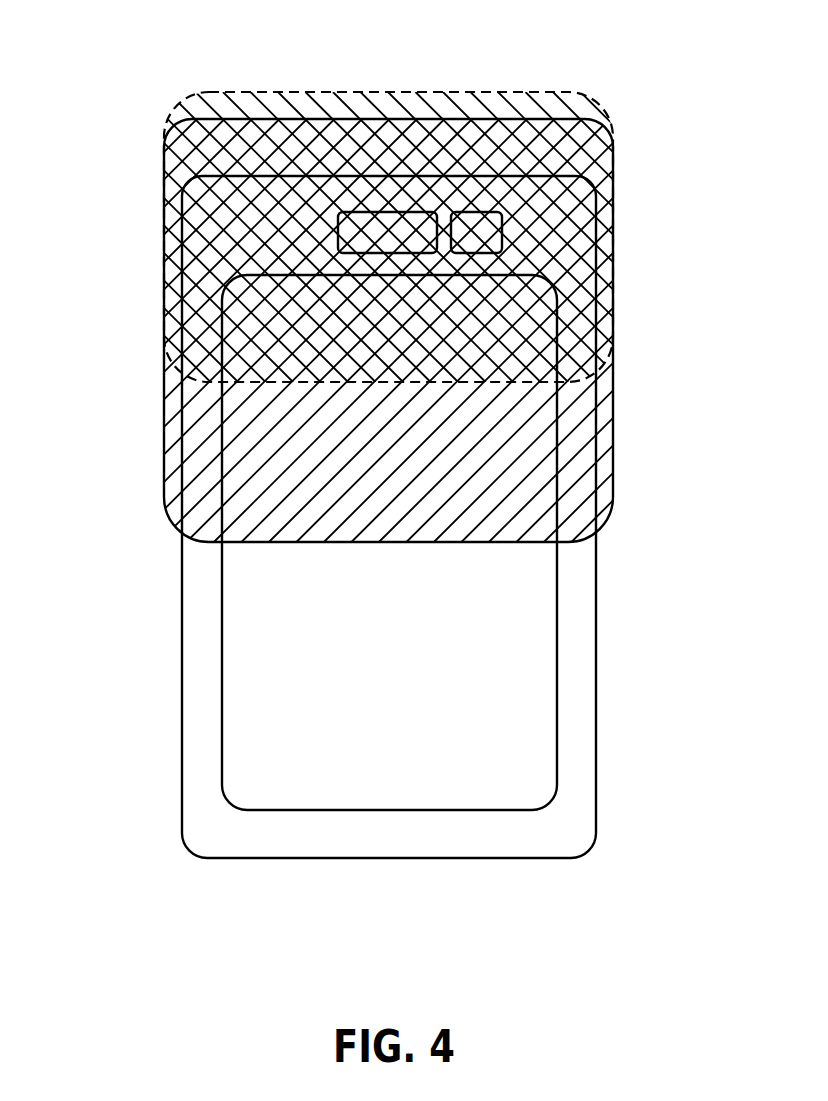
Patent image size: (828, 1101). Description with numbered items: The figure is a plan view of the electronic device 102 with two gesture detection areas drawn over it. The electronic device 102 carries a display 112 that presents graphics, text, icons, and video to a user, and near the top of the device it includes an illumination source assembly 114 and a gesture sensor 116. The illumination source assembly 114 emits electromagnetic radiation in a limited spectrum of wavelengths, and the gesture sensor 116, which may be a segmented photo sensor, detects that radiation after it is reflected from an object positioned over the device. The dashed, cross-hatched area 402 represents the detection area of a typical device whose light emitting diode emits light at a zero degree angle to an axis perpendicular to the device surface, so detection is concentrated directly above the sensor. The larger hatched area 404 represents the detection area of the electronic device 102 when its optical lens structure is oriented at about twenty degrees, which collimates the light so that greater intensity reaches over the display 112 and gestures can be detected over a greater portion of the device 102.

The electronic device 102 is at (324, 870).
The display 112 is at (240, 632).
The illumination source assembly 114 is at (388, 222).
The gesture sensor 116 is at (474, 228).
The area 402 is at (199, 93).
The area 404 is at (172, 436).